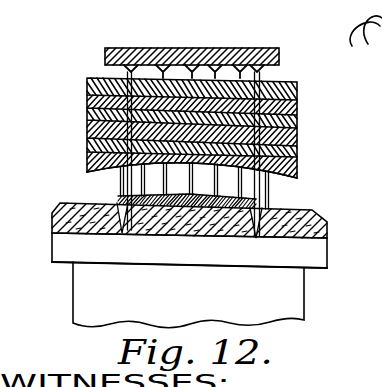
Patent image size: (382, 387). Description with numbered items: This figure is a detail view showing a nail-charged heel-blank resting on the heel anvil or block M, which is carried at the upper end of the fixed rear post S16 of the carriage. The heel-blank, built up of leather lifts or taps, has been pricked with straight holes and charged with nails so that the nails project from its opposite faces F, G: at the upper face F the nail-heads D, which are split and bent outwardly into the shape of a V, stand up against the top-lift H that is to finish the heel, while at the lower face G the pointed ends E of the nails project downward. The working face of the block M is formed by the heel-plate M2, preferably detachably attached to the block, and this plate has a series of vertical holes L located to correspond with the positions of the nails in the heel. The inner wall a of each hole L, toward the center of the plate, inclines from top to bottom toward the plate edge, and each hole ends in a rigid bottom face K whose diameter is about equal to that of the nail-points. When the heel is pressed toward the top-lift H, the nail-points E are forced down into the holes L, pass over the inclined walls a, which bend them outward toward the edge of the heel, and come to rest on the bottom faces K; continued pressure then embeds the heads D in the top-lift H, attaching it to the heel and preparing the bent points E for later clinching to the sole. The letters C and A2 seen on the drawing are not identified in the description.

The top-lift H is at (174, 54).
The nail-heads D is at (182, 64).
The face of the heel F is at (88, 78).
The laminated layers C is at (87, 117).
The bottom curved layer A2 is at (87, 152).
The face of the heel G is at (91, 174).
The nail-points E is at (142, 179).
The inclined wall a is at (120, 200).
The holes L is at (120, 219).
The heel-plate M2 is at (52, 233).
The rigid bottom faces K is at (122, 234).
The heel anvil or block M is at (189, 250).
The rear post S16 is at (188, 295).